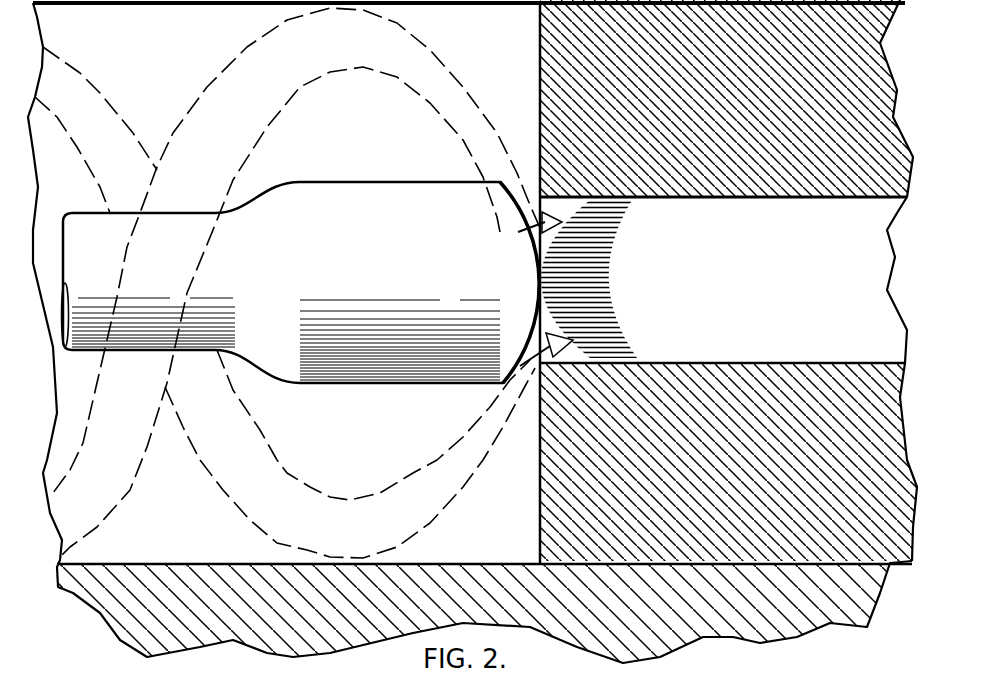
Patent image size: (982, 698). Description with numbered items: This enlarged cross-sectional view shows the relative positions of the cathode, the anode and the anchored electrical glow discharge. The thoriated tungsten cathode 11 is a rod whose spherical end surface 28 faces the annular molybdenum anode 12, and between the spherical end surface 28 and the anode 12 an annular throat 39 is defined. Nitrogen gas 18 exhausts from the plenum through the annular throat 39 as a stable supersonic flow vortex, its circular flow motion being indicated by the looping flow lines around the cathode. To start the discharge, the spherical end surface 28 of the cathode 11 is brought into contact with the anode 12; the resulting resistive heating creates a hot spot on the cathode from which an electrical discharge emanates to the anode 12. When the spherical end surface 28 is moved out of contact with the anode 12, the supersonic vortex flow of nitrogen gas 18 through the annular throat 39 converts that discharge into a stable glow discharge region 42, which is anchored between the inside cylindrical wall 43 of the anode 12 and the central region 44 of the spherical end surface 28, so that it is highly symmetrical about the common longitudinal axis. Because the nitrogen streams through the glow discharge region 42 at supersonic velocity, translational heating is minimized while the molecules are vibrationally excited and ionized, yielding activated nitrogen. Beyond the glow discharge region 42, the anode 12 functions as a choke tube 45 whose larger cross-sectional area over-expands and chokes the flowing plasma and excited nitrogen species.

The thoriated tungsten cathode 11 is at (340, 266).
The annular molybdenum anode 12 is at (543, 82).
The nitrogen gas 18 is at (236, 493).
The spherical end surface 28 is at (523, 304).
The annular throat 39 is at (512, 235).
The glow discharge region 42 is at (611, 331).
The inside cylindrical wall 43 is at (648, 360).
The central region 44 is at (540, 277).
The choke tube 45 is at (812, 283).